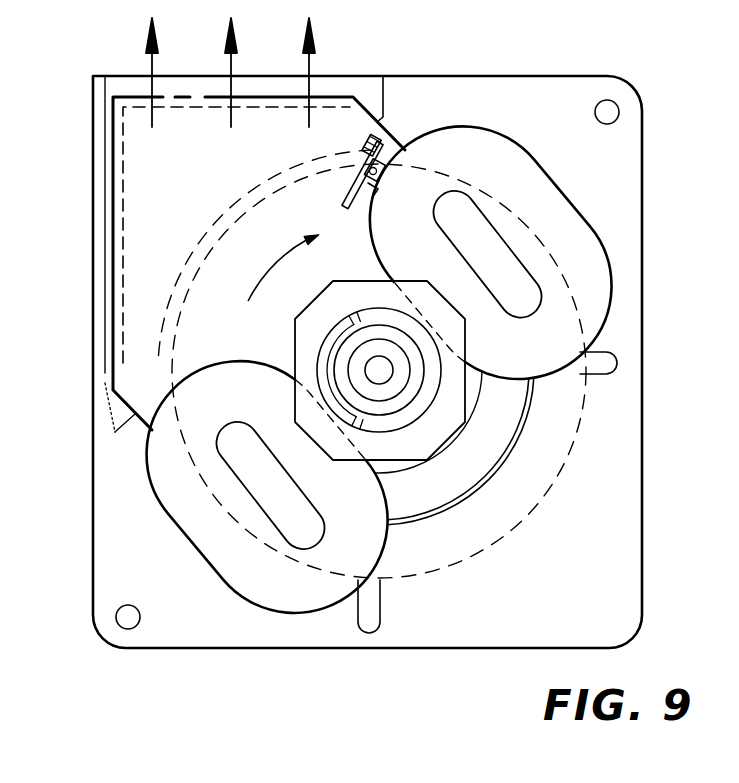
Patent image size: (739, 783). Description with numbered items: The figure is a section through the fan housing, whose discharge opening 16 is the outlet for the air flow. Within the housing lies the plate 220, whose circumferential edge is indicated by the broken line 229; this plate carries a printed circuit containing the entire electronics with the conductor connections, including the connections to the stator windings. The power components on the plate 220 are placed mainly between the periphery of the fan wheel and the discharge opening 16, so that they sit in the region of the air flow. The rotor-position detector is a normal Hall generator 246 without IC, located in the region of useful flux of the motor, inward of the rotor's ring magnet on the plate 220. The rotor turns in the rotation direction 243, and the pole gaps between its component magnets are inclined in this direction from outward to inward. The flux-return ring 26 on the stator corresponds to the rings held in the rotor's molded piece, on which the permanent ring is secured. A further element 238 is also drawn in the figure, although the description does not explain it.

The discharge opening 16 is at (121, 61).
The plate 220 is at (133, 172).
The broken line 229 is at (115, 265).
The rotation direction 243 is at (271, 268).
The Hall generator 246 is at (486, 50).
The hub plate 238 is at (445, 410).
The flux-return ring 26 is at (495, 455).